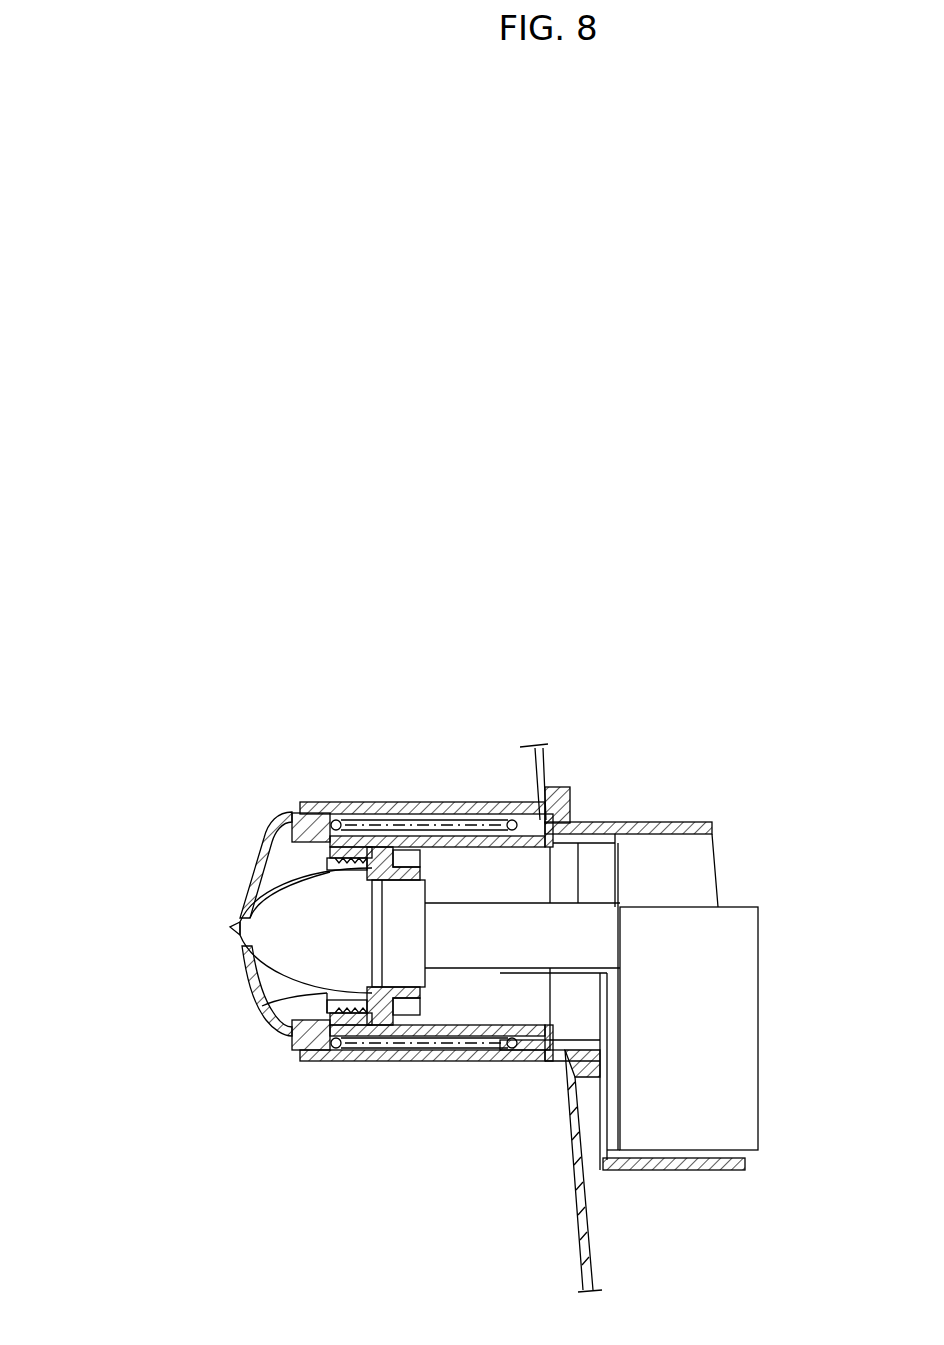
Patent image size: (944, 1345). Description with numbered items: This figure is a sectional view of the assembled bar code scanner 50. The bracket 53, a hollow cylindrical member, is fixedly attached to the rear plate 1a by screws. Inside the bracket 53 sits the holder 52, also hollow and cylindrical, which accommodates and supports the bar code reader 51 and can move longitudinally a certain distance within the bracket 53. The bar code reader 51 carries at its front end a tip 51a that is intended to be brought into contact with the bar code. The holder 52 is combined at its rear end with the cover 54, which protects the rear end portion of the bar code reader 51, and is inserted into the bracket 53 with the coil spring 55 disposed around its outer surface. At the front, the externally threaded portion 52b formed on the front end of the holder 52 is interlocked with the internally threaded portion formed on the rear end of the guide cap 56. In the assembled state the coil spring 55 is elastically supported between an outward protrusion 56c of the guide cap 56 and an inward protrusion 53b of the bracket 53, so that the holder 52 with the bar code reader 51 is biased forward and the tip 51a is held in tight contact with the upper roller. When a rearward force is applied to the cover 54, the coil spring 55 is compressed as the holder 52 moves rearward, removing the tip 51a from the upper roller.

The bar code scanner 50 is at (482, 641).
The bar code reader 51 is at (483, 932).
The tip 51a is at (232, 927).
The holder 52 is at (424, 1062).
The externally threaded portion 52b is at (262, 1006).
The bracket 53 is at (349, 1062).
The inward protrusion 53b is at (530, 1047).
The cover 54 is at (660, 822).
The coil spring 55 is at (350, 814).
The guide cap 56 is at (262, 848).
The outward protrusion 56c is at (288, 1040).
The rear plate 1a is at (586, 1237).